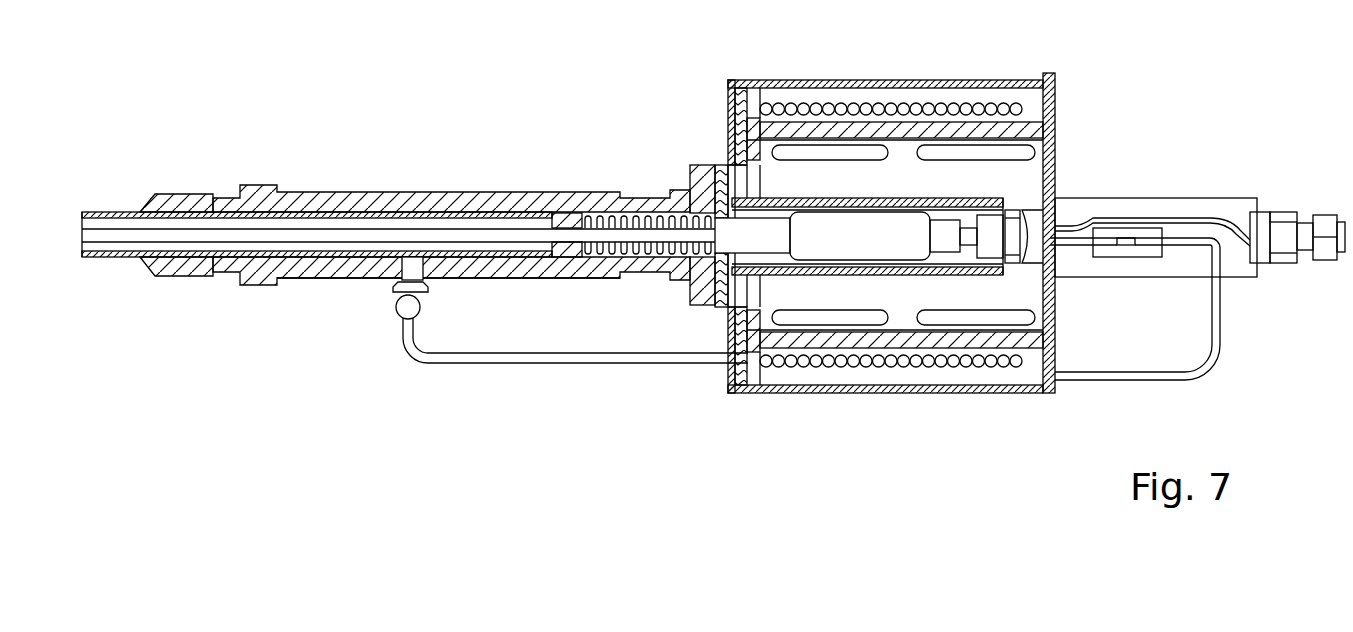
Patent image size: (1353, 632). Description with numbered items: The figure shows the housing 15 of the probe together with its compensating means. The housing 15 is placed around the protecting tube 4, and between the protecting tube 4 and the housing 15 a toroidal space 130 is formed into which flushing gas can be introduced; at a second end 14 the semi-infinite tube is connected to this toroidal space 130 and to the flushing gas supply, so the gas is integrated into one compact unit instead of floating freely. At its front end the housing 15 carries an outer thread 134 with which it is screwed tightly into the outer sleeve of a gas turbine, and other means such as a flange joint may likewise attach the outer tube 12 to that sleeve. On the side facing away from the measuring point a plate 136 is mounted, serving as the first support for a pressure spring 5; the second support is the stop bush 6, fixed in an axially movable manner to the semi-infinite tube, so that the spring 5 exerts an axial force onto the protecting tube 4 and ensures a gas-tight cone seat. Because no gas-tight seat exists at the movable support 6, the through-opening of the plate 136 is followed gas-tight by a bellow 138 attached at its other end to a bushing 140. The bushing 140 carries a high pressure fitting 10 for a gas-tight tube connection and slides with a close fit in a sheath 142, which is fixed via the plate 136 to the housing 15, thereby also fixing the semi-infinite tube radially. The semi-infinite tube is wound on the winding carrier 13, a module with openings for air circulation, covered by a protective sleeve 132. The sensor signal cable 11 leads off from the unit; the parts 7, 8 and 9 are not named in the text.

The protecting tube 4 is at (97, 210).
The outer thread 134 is at (182, 194).
The toroidal space 130 is at (341, 205).
The housing 15 is at (308, 279).
The stop bush 6 is at (572, 257).
The pressure spring 5 is at (633, 257).
The second end 14 is at (405, 312).
The outer tube 12 is at (515, 364).
The plate 136 is at (702, 188).
The end plate 8 is at (723, 288).
The protective sleeve 132 is at (832, 394).
The winding carrier 13 is at (1020, 375).
The sheath 142 is at (790, 195).
The rod 7 is at (762, 232).
The bellow 138 is at (833, 223).
The bushing 140 is at (943, 230).
The stop block 9 is at (970, 222).
The high pressure fitting 10 is at (1037, 223).
The sensor signal cable 11 is at (1148, 222).